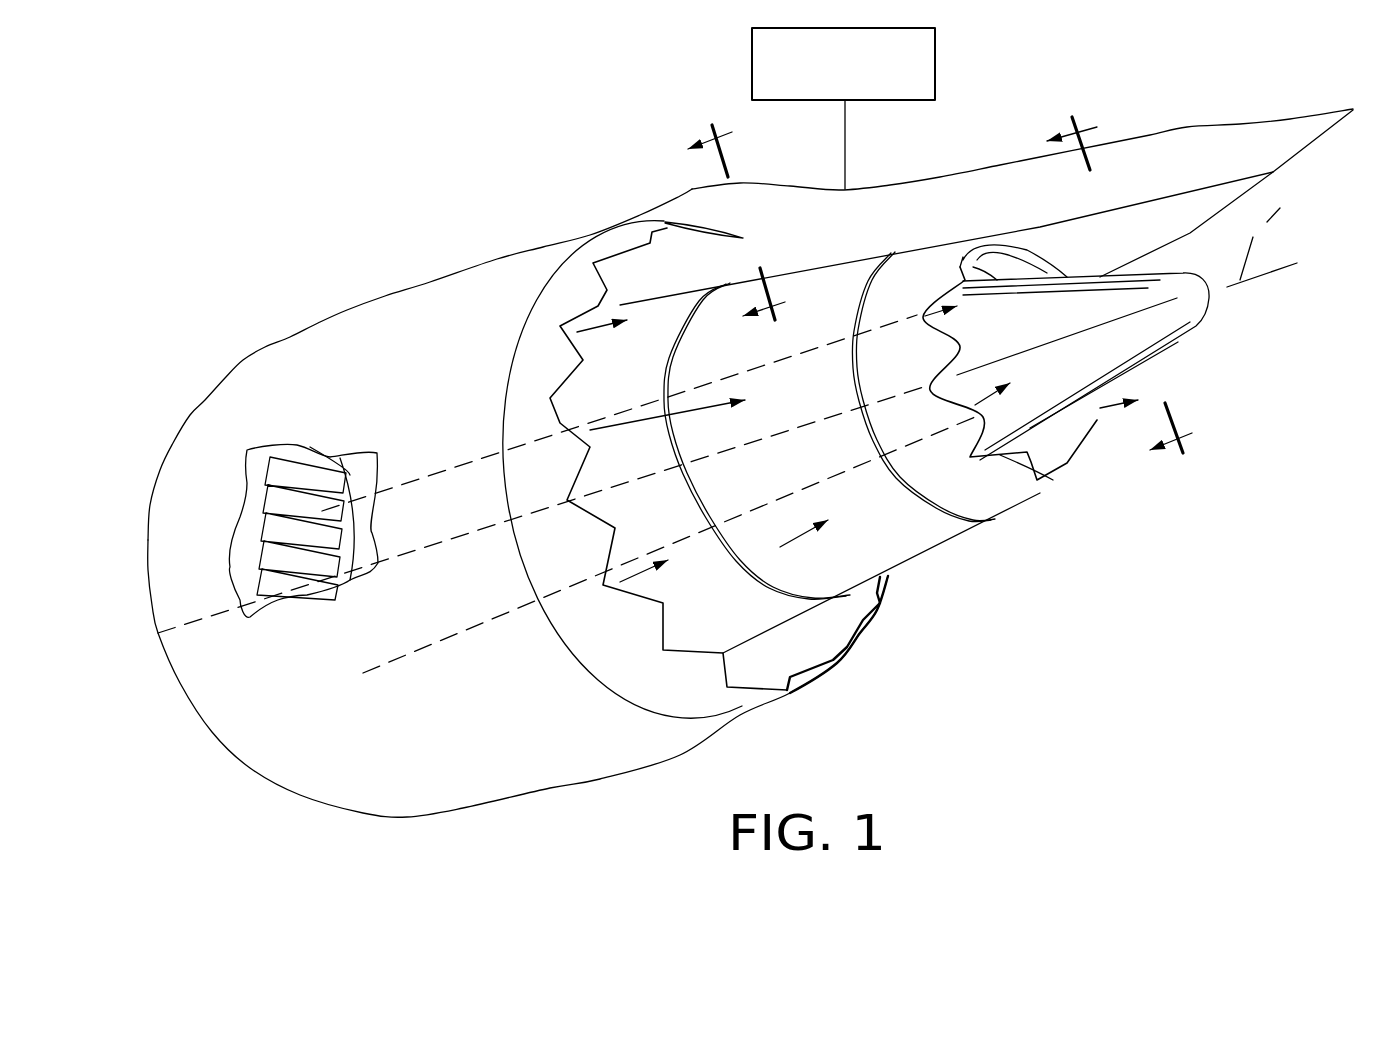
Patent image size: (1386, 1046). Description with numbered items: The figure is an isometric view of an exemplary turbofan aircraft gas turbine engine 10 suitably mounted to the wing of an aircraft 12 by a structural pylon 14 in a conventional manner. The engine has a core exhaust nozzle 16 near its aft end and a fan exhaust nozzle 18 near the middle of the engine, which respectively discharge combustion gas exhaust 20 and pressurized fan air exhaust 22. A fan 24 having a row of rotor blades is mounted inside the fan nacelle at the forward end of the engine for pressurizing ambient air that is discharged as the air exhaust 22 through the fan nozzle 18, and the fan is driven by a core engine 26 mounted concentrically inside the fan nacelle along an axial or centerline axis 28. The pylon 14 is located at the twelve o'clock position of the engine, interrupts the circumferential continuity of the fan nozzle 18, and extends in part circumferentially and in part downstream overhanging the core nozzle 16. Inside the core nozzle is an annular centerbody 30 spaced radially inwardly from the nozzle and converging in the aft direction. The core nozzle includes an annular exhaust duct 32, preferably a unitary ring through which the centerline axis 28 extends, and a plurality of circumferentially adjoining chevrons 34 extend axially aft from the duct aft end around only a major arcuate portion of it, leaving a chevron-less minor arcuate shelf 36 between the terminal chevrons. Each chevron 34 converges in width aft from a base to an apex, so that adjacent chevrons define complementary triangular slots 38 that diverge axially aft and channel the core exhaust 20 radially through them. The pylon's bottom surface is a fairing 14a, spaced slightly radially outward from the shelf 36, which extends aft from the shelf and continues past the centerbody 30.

The turbofan aircraft gas turbine engine 10 is at (350, 186).
The aircraft 12 is at (937, 63).
The structural pylon 14 is at (993, 214).
The fairing 14a is at (1107, 237).
The core exhaust nozzle 16 is at (1010, 510).
The fan exhaust nozzle 18 is at (645, 730).
The combustion gas exhaust 20 is at (1115, 408).
The pressurized fan air exhaust 22 is at (497, 620).
The fan 24 is at (330, 457).
The core engine 26 is at (778, 492).
The centerline axis 28 is at (1293, 197).
The annular centerbody 30 is at (1183, 343).
The annular exhaust duct 32 is at (543, 714).
The chevrons 34 is at (650, 610).
The chevron-less minor arcuate shelf 36 is at (703, 225).
The triangular slots 38 is at (977, 382).